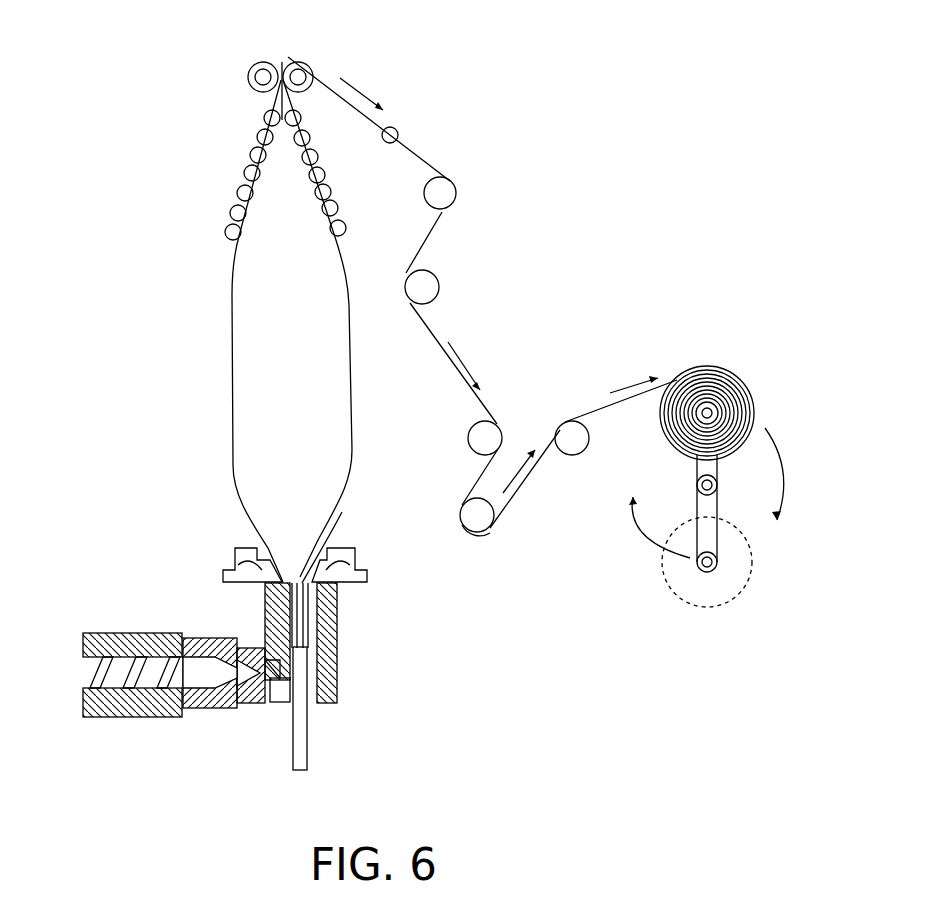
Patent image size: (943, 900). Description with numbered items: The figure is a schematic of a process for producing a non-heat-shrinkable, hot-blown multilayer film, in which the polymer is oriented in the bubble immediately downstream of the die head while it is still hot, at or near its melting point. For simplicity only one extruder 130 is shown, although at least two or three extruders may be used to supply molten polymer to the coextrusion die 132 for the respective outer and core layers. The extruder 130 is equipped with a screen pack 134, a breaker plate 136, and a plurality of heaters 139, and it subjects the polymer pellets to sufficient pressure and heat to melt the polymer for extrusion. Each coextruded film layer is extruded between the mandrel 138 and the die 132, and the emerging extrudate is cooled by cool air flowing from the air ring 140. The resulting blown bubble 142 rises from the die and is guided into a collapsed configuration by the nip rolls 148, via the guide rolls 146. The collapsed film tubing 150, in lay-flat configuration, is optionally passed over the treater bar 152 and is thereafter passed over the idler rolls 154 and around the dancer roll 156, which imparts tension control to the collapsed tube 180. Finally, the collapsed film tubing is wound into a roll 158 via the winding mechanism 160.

The extruder 130 is at (138, 631).
The coextrusion die 132 is at (327, 582).
The screen pack 134 is at (198, 637).
The breaker plate 136 is at (200, 707).
The mandrel 138 is at (342, 513).
The heaters 139 is at (262, 702).
The air ring 140 is at (233, 553).
The bubble 142 is at (232, 340).
The guide rolls 146 is at (225, 223).
The nip rolls 148 is at (288, 57).
The collapsed film tubing 150 is at (281, 100).
The treater bar 152 is at (392, 127).
The idler rolls 154 is at (436, 265).
The dancer roll 156 is at (497, 520).
The roll 158 is at (740, 520).
The winding mechanism 160 is at (697, 487).
The collapsed tube 180 is at (567, 423).